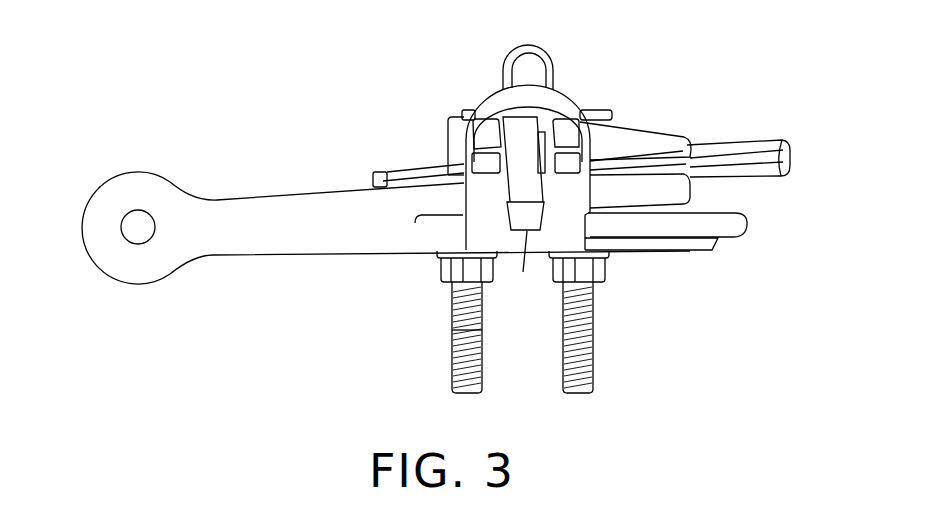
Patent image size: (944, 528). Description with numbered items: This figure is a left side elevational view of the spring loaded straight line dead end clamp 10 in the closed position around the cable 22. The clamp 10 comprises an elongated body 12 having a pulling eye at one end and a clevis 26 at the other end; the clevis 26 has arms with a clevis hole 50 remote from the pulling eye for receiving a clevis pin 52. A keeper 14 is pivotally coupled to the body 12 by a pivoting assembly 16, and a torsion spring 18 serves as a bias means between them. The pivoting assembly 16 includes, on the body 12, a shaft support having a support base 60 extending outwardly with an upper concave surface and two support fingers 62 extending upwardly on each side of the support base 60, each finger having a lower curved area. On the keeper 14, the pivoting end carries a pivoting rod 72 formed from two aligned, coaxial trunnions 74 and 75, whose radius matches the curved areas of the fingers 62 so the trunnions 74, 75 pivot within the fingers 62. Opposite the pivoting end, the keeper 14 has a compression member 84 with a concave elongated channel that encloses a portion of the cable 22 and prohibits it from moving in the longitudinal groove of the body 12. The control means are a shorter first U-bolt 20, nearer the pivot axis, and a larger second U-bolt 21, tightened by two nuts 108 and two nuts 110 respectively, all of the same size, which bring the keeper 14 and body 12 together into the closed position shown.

The spring loaded straight line dead end clamp 10 is at (185, 104).
The body 12 is at (292, 265).
The keeper 14 is at (656, 107).
The pivoting assembly 16 is at (422, 60).
The torsion spring 18 is at (549, 178).
The first U-bolt 20 is at (482, 328).
The second U-bolt 21 is at (448, 362).
The cable 22 is at (770, 131).
The clevis 26 is at (224, 191).
The clevis hole 50 is at (135, 230).
The clevis pin 52 is at (141, 232).
The support base 60 is at (519, 264).
The support fingers 62 is at (492, 116).
The pivoting rod 72 is at (454, 150).
The trunnion 74 is at (457, 164).
The trunnion 75 is at (586, 150).
The compression member 84 is at (683, 138).
The nuts 108 is at (488, 268).
The nuts 110 is at (442, 272).